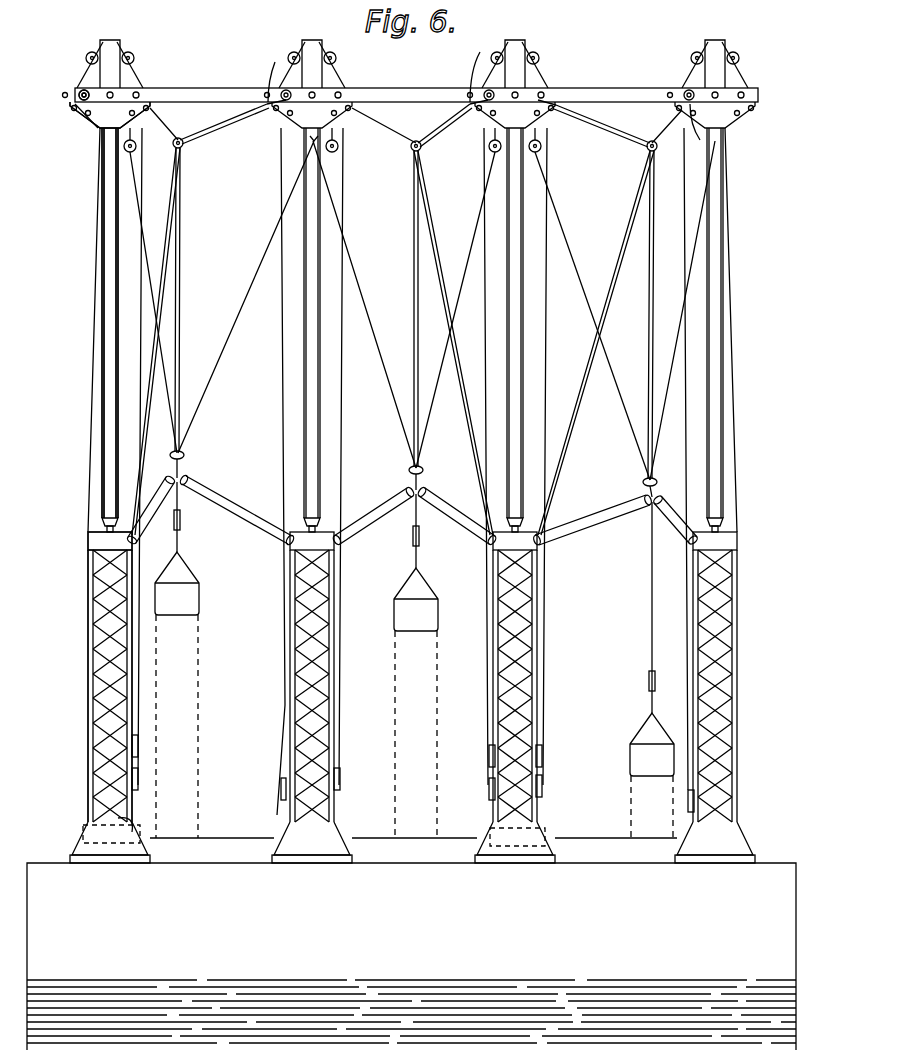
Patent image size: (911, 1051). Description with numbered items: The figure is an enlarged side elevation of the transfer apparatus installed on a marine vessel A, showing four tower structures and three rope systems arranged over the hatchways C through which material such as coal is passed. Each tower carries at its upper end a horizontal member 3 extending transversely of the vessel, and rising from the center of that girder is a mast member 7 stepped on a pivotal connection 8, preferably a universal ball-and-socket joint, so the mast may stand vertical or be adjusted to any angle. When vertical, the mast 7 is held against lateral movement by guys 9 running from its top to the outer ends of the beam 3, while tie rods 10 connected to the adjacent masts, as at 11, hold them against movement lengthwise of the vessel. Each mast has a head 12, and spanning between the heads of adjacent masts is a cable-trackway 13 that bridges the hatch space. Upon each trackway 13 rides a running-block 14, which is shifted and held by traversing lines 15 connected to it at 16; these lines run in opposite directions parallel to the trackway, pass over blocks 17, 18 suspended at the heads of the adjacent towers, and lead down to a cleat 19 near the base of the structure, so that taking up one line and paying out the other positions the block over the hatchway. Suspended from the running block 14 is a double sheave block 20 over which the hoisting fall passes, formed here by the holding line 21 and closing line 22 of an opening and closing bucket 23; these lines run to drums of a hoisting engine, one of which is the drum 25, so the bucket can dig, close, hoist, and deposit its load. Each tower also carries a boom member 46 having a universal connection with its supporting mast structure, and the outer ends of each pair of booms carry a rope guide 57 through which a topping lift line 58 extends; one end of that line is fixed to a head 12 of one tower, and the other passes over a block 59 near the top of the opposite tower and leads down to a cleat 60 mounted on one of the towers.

The horizontal member 3 is at (86, 540).
The mast member 7 is at (100, 318).
The pivotal connection 8 is at (744, 522).
The guys 9 is at (108, 348).
The tie rods 10 is at (228, 78).
The connection of tie rods 11 is at (125, 93).
The head 12 is at (88, 118).
The cable-trackway 13 is at (238, 118).
The running-block 14 is at (401, 308).
The traversing lines 15 is at (235, 95).
The connection of traversing lines 16 is at (416, 121).
The block 17 is at (172, 100).
The block 18 is at (487, 96).
The cleat 19 is at (139, 779).
The double sheave block 20 is at (184, 148).
The holding line 21 is at (170, 195).
The closing line 22 is at (175, 212).
The opening and closing bucket 23 is at (185, 612).
The drum 25 is at (135, 826).
The boom member 46 is at (240, 508).
The rope guide 57 is at (185, 457).
The topping lift line 58 is at (728, 160).
The block 59 is at (124, 148).
The cleat 60 is at (139, 746).
The marine vessel A is at (411, 956).
The hatchways C is at (413, 850).